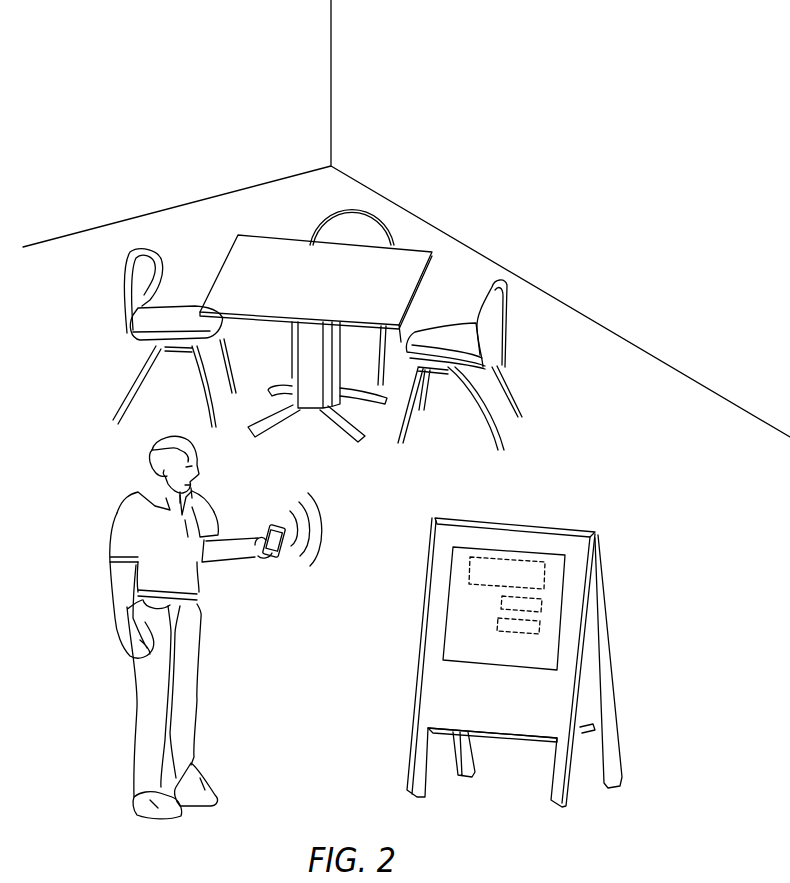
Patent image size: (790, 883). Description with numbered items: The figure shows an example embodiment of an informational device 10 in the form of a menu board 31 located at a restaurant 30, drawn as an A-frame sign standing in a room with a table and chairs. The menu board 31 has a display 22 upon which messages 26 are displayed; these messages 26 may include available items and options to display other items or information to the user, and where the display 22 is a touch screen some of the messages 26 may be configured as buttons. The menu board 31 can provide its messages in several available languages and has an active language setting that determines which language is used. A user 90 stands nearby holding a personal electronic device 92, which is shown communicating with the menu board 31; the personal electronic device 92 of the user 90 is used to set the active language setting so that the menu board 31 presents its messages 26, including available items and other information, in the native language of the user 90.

The informational device 10 is at (499, 662).
The menu board 31 is at (499, 662).
The display 22 is at (557, 643).
The messages 26 is at (500, 600).
The restaurant 30 is at (672, 521).
The user 90 is at (202, 660).
The personal electronic device 92 is at (268, 557).